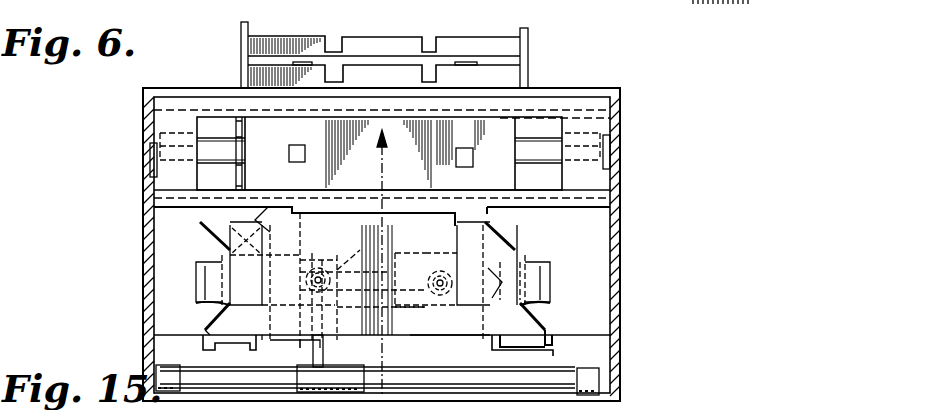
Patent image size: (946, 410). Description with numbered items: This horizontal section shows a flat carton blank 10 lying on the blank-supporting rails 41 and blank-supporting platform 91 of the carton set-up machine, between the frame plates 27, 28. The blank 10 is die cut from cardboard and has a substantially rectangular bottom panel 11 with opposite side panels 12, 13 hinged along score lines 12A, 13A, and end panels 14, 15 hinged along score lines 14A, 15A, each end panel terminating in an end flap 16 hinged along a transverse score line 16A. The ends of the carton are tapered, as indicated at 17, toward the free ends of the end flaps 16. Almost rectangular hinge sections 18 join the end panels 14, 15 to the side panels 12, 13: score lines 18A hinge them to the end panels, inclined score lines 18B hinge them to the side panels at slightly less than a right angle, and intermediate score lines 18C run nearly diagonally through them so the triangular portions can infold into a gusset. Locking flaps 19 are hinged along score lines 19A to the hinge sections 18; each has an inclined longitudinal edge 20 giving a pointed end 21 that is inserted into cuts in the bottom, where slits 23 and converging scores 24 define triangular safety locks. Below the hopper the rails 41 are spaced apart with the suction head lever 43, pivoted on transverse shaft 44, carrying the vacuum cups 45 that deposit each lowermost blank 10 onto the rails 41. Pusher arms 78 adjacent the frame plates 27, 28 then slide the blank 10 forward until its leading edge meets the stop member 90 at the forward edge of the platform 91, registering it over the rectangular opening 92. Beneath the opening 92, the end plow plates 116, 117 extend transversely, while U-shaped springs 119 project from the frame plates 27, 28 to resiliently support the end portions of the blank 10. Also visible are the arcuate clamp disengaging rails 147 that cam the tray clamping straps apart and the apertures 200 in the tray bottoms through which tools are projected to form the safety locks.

The carton blank 10 is at (421, 345).
The bottom panel 11 is at (472, 271).
The side panel 12 is at (468, 340).
The score line 12A is at (345, 305).
The side panel 13 is at (426, 212).
The score line 13A is at (395, 246).
The end panel 14 is at (522, 301).
The score line 14A is at (496, 274).
The end panel 15 is at (254, 283).
The score line 15A is at (377, 272).
The end flap 16 is at (210, 256).
The score line 16A is at (205, 278).
The taper 17 is at (212, 300).
The hinge section 18 is at (255, 345).
The score line 18A is at (265, 284).
The score line 18B is at (280, 242).
The intermediate score line 18C is at (490, 224).
The locking flap 19 is at (205, 225).
The score line 19A is at (228, 242).
The inclined longitudinal edge 20 is at (205, 330).
The pointed end 21 is at (200, 340).
The slit 23 is at (306, 280).
The score 24 is at (300, 285).
The frame plate 27 is at (612, 182).
The frame plate 28 is at (143, 178).
The blank-supporting rail 41 is at (322, 200).
The suction head lever 43 is at (345, 358).
The transverse shaft 44 is at (548, 350).
The vacuum cup 45 is at (370, 262).
The pusher arm 78 is at (318, 350).
The stop member 90 is at (540, 96).
The blank-supporting platform 91 is at (600, 208).
The rectangular opening 92 is at (218, 108).
The end plow plate 116 is at (515, 182).
The end plow plate 117 is at (245, 184).
The U-shaped spring 119 is at (152, 146).
The clamp disengaging rail 147 is at (241, 46).
The aperture 200 is at (245, 153).